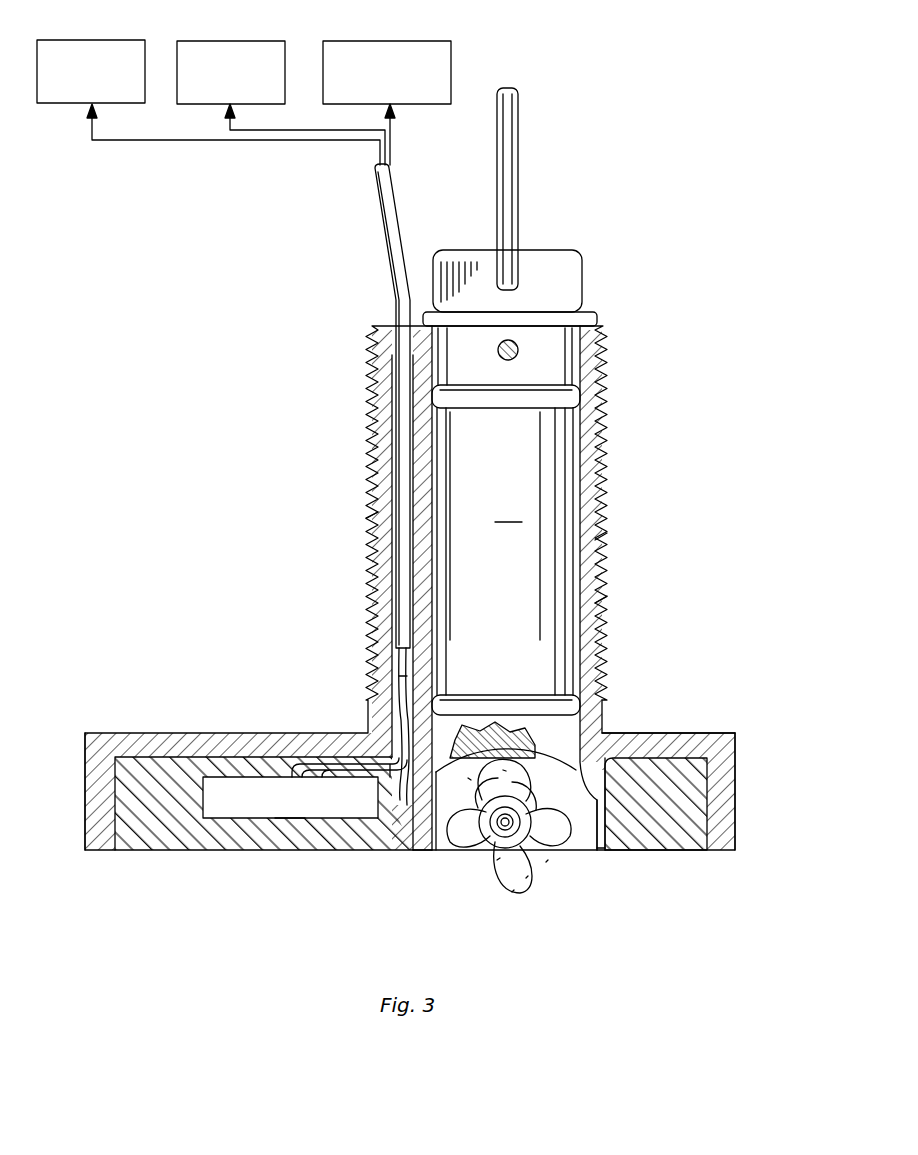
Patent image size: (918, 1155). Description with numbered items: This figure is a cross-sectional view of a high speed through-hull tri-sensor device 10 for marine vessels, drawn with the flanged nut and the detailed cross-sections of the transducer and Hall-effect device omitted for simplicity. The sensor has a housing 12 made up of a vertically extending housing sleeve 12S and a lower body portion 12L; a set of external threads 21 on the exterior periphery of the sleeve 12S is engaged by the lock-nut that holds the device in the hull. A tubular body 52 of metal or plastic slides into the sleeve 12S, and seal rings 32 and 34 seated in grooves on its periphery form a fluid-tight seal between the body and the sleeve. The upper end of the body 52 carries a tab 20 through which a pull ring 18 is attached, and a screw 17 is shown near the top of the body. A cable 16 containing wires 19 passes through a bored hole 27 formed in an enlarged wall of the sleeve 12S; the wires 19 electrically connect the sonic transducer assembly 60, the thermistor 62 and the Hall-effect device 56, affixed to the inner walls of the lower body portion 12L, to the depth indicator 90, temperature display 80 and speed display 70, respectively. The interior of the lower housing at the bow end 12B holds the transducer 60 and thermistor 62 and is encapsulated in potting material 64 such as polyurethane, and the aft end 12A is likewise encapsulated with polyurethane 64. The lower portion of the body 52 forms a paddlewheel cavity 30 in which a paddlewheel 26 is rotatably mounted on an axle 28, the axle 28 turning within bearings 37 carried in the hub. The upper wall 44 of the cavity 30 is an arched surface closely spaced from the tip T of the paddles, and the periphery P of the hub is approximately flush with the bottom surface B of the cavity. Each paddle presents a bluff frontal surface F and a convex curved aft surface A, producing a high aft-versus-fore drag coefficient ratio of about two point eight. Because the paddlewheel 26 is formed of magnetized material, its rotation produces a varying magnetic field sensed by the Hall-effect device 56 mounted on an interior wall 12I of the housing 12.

The speed display 70 is at (98, 40).
The temperature display 80 is at (242, 41).
The depth indicator 90 is at (394, 41).
The cable 16 is at (404, 216).
The pull ring 18 is at (518, 212).
The tab 20 is at (578, 282).
The screw 17 is at (498, 350).
The housing 12 is at (609, 462).
The housing sleeve 12S is at (605, 540).
The external threads 21 is at (606, 601).
The bored hole 27 is at (378, 520).
The lower body portion 12L is at (702, 733).
The aft end 12A is at (737, 809).
The bow end 12B is at (85, 806).
The potting material 64 is at (167, 845).
The sonic transducer assembly 60 is at (290, 798).
The thermistor 62 is at (378, 750).
The tubular body 52 is at (506, 550).
The seal ring 32 is at (565, 410).
The seal ring 34 is at (568, 706).
The upper wall 44 is at (561, 768).
The axle 28 is at (490, 851).
The aft surface A is at (470, 778).
The frontal surface F is at (503, 770).
The periphery P is at (498, 860).
The tip T is at (512, 892).
The bottom surface B is at (546, 862).
The bearings 37 is at (527, 878).
The paddlewheel cavity 30 is at (431, 852).
The interior wall 12I is at (577, 846).
The Hall-effect device 56 is at (601, 848).
The wires 19 is at (400, 676).
The tri-sensor device 10 is at (700, 478).
The paddlewheel 26 is at (412, 892).